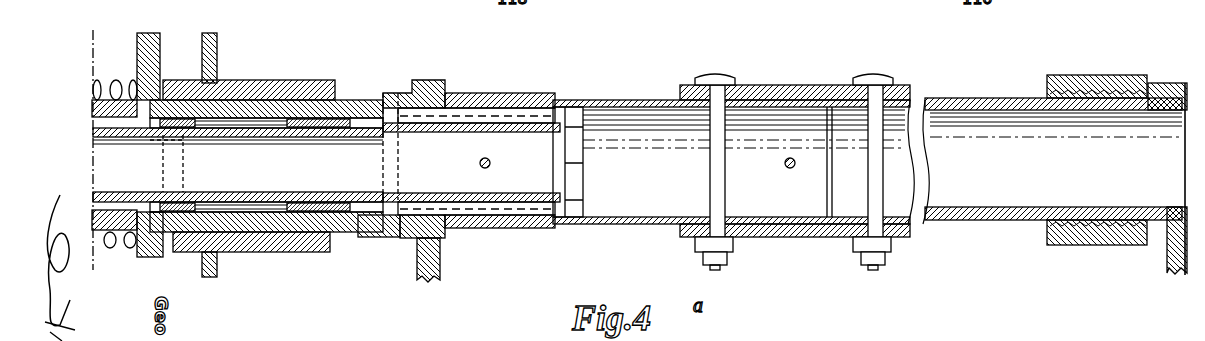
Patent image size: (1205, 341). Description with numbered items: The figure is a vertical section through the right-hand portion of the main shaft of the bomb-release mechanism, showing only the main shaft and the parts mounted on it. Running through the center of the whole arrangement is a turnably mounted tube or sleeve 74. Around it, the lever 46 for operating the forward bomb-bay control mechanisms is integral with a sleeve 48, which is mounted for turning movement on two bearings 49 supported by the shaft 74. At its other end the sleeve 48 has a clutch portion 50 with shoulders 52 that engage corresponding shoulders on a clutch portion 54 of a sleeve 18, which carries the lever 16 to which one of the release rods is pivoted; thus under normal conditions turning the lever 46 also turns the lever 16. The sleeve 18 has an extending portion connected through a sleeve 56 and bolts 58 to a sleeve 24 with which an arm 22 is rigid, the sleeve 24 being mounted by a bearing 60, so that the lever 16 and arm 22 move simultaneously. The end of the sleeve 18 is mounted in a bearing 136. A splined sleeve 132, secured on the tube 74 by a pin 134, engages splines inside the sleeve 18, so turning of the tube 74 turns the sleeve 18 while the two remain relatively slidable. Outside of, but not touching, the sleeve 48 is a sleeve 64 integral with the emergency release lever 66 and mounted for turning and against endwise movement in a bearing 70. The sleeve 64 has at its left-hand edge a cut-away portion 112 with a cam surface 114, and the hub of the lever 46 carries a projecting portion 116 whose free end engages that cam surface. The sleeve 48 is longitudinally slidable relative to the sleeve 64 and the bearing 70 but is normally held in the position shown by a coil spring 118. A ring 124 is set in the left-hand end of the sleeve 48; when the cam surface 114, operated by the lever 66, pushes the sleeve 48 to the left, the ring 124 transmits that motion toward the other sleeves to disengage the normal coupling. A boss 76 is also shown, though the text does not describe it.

The lever 16 is at (440, 265).
The sleeve 18 is at (398, 90).
The arm 22 is at (1168, 265).
The sleeve 24 is at (1010, 222).
The lever 46 is at (153, 55).
The sleeve 48 is at (307, 253).
The bearings 49 is at (153, 115).
The clutch portion 50 is at (372, 240).
The shoulders 52 is at (388, 178).
The clutch portion 54 is at (415, 255).
The sleeve 56 is at (815, 240).
The bolts 58 is at (790, 158).
The bearing 60 is at (1095, 95).
The sleeve 64 is at (290, 97).
The emergency release lever 66 is at (213, 56).
The bearing 70 is at (250, 85).
The tube or sleeve 74 is at (528, 200).
The lower threaded portion 76 is at (285, 200).
The cut-away portion 112 is at (170, 185).
The cam surface 114 is at (205, 138).
The projecting portion 116 is at (165, 148).
The coil spring 118 is at (143, 250).
The ring 124 is at (93, 140).
The splined sleeve 132 is at (548, 115).
The pin 134 is at (480, 168).
The bearing 136 is at (525, 93).